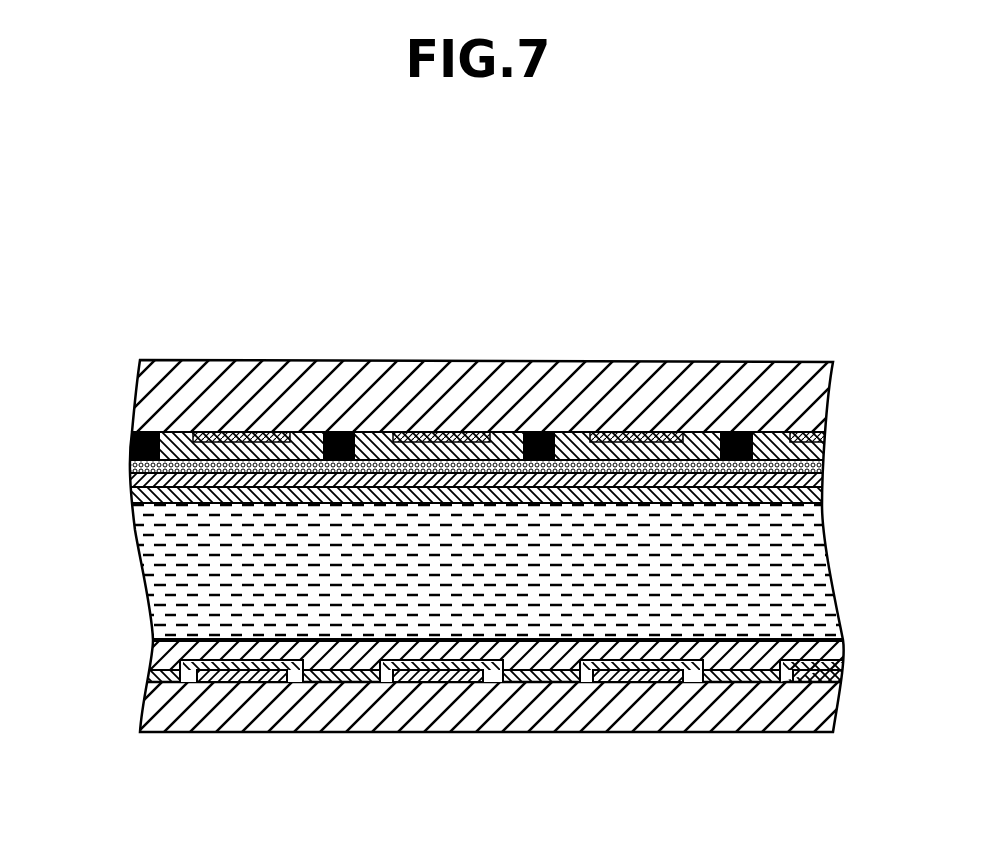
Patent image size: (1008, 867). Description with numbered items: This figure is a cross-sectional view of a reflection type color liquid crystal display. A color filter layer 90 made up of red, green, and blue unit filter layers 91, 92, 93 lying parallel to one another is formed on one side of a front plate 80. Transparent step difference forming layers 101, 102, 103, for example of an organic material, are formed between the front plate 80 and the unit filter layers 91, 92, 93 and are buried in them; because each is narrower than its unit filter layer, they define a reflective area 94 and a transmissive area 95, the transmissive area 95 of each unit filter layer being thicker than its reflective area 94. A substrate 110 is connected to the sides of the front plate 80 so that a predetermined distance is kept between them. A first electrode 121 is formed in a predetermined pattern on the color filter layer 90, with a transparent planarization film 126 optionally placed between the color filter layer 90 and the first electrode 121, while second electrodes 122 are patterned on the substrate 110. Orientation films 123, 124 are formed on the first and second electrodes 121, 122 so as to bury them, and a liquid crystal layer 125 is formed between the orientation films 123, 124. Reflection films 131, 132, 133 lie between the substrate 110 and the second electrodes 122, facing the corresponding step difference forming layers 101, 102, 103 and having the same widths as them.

The front plate 80 is at (146, 401).
The color filter layer 90 is at (840, 430).
The red unit filter layer 91 is at (181, 428).
The green unit filter layer 92 is at (512, 428).
The blue unit filter layer 93 is at (712, 428).
The reflective area 94 is at (478, 790).
The transmissive area 95 is at (347, 683).
The transparent step difference forming layer 101 is at (262, 432).
The transparent step difference forming layer 102 is at (442, 432).
The transparent step difference forming layer 103 is at (640, 432).
The substrate 110 is at (782, 713).
The first electrode 121 is at (134, 481).
The second electrode 122 is at (182, 683).
The orientation film 123 is at (134, 496).
The orientation film 124 is at (158, 647).
The liquid crystal layer 125 is at (150, 578).
The transparent planarization film 126 is at (132, 463).
The reflection film 131 is at (250, 683).
The reflection film 132 is at (433, 684).
The reflection film 133 is at (642, 683).